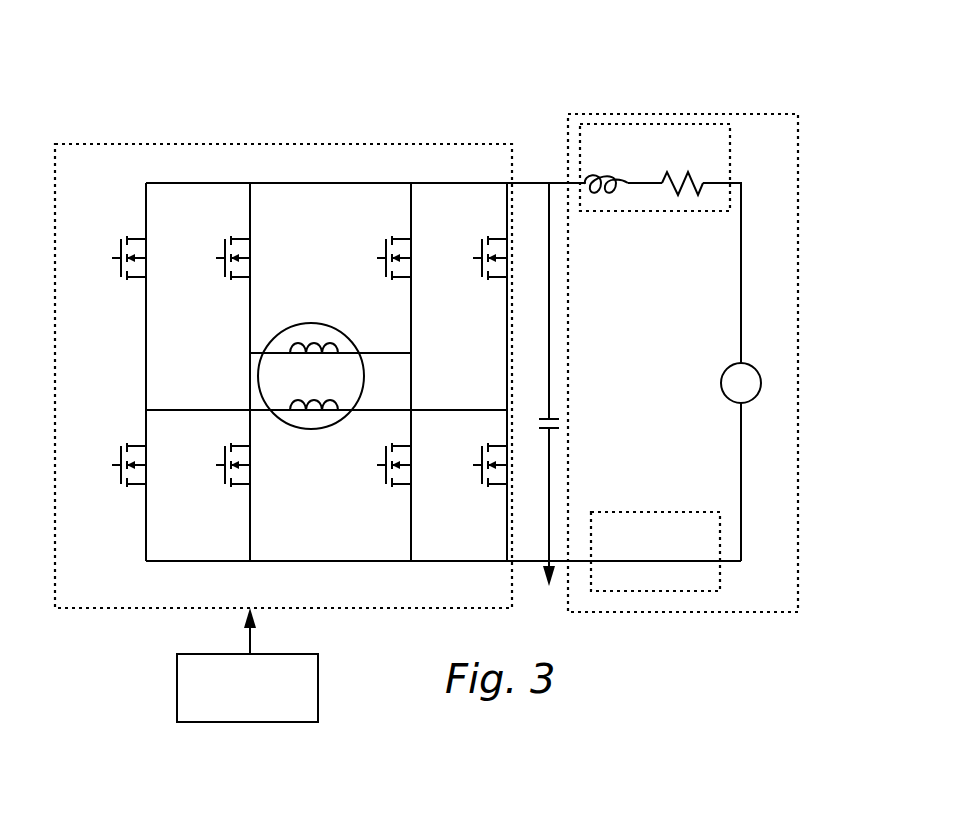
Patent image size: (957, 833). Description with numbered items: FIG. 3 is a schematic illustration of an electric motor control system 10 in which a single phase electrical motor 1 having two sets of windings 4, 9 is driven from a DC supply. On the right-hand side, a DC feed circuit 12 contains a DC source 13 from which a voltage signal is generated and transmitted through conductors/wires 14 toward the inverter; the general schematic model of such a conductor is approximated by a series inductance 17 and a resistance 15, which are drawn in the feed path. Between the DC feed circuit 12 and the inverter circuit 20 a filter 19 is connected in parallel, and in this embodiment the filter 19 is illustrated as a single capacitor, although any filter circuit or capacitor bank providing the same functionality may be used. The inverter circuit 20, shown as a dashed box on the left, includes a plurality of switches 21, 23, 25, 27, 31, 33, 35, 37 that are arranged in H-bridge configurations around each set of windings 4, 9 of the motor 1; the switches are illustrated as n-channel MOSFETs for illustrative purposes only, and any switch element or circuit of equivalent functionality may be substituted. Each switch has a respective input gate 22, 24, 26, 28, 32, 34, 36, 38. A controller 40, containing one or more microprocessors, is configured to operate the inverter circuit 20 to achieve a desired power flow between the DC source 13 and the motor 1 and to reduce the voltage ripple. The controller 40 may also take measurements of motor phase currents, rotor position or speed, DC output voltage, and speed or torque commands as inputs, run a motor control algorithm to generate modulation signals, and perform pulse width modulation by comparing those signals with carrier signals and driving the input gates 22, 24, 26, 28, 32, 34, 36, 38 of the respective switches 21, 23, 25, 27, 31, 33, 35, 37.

The electric motor control system 10 is at (553, 101).
The inverter circuit 20 is at (281, 144).
The DC feed circuit 12 is at (647, 612).
The conductors/wires 14 is at (718, 124).
The series inductance 17 is at (606, 169).
The resistance 15 is at (682, 170).
The DC source 13 is at (742, 386).
The filter 19 is at (553, 418).
The single phase electrical motor 1 is at (312, 322).
The set of windings 4 is at (338, 353).
The set of windings 9 is at (309, 413).
The switch 21 is at (259, 258).
The input gate 22 is at (208, 258).
The switch 23 is at (419, 255).
The input gate 24 is at (365, 258).
The switch 25 is at (258, 465).
The input gate 26 is at (207, 468).
The switch 27 is at (419, 461).
The input gate 28 is at (369, 465).
The switch 31 is at (154, 258).
The input gate 32 is at (103, 258).
The switch 33 is at (517, 258).
The input gate 34 is at (463, 260).
The switch 35 is at (154, 465).
The input gate 36 is at (102, 465).
The switch 37 is at (517, 465).
The input gate 38 is at (464, 465).
The controller 40 is at (247, 665).